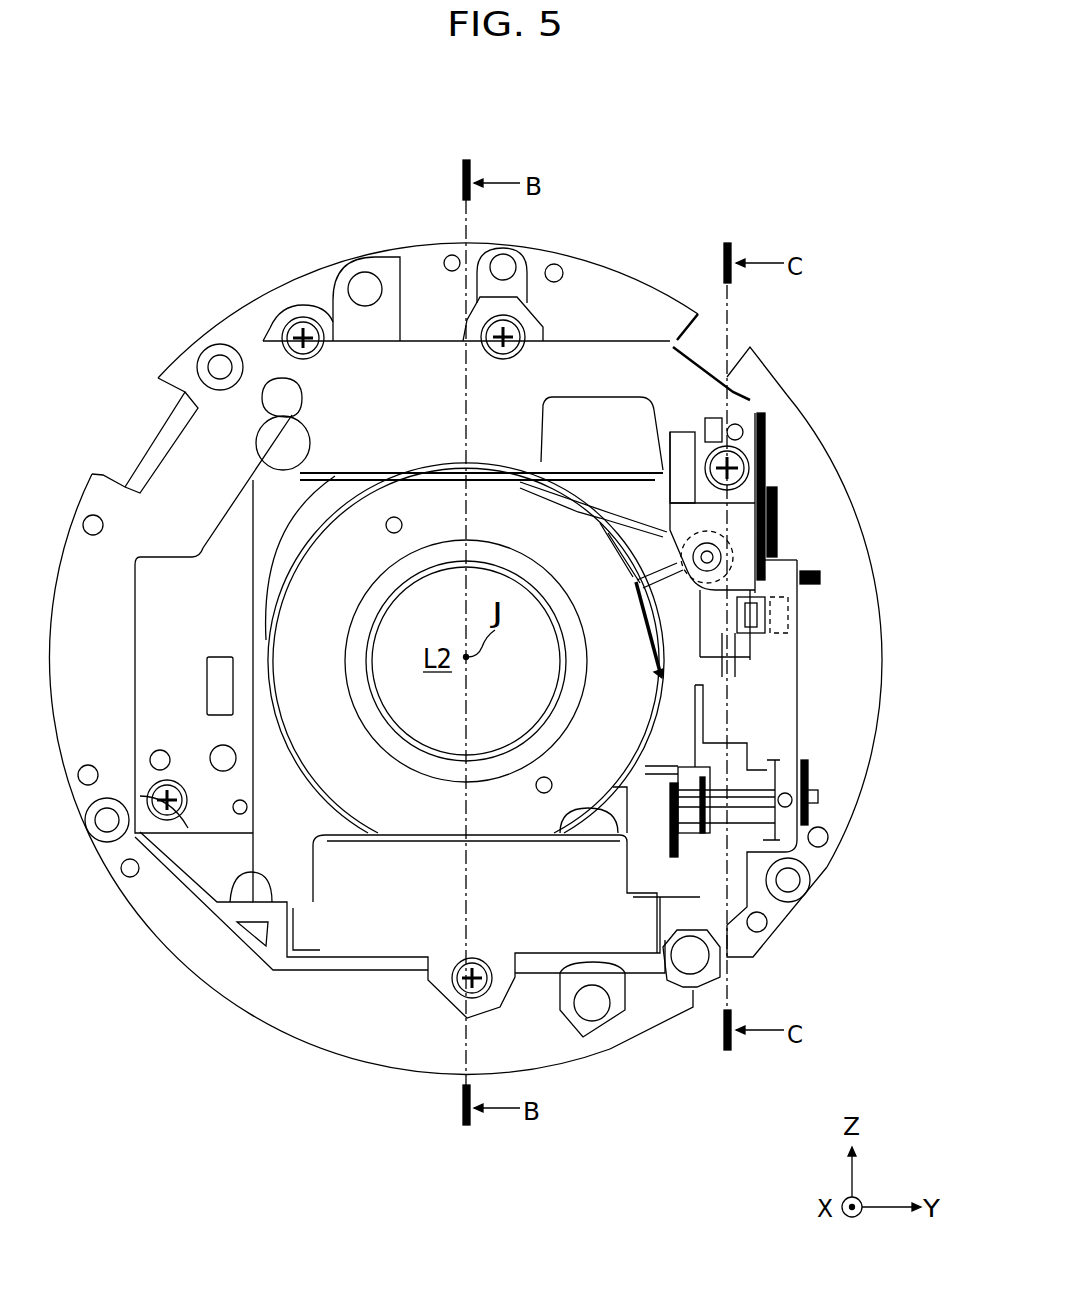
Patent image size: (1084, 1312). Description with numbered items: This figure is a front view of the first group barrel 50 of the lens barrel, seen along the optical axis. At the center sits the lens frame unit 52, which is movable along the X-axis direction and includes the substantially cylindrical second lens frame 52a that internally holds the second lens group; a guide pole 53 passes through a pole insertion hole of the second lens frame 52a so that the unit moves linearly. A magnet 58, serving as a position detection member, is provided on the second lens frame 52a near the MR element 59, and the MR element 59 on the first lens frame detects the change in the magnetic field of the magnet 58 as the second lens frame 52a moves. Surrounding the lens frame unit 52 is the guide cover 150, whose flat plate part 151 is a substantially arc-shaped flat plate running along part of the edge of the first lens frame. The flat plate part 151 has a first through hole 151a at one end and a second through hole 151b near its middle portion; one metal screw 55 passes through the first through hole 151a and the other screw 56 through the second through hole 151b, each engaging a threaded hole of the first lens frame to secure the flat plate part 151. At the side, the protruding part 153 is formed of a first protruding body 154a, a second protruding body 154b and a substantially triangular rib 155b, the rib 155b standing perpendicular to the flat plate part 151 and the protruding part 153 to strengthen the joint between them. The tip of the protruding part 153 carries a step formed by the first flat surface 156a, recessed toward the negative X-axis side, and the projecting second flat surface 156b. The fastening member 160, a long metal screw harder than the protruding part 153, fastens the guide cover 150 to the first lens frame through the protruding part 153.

The first group barrel 50 is at (821, 168).
The lens frame unit 52 is at (665, 678).
The second lens frame 52a is at (632, 699).
The guide pole 53 is at (737, 570).
The screw 55 is at (150, 808).
The screw 56 is at (296, 318).
The magnet 58 is at (753, 610).
The MR element 59 is at (800, 630).
The guide cover 150 is at (428, 341).
The flat plate part 151 is at (630, 373).
The first through hole 151a is at (188, 830).
The second through hole 151b is at (288, 326).
The protruding part 153 is at (738, 522).
The first protruding body 154a is at (698, 456).
The second protruding body 154b is at (820, 580).
The rib 155b is at (743, 432).
The first flat surface 156a is at (768, 490).
The second flat surface 156b is at (770, 568).
The fastening member 160 is at (740, 462).